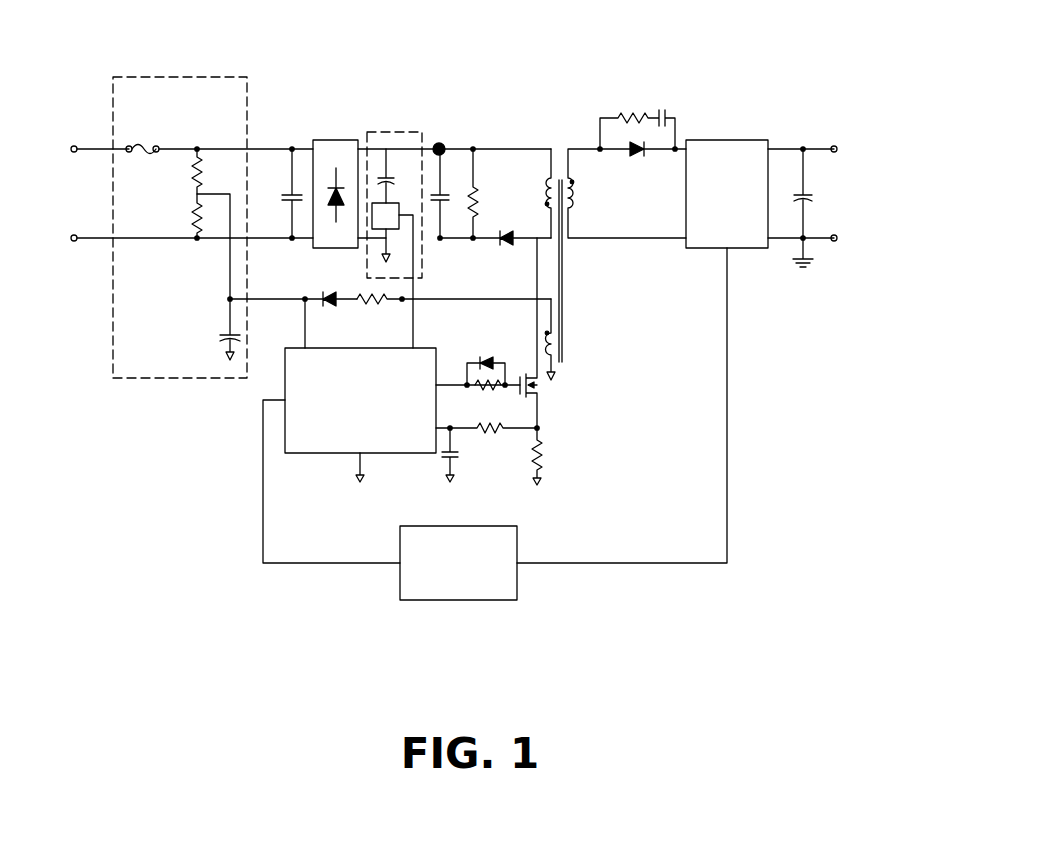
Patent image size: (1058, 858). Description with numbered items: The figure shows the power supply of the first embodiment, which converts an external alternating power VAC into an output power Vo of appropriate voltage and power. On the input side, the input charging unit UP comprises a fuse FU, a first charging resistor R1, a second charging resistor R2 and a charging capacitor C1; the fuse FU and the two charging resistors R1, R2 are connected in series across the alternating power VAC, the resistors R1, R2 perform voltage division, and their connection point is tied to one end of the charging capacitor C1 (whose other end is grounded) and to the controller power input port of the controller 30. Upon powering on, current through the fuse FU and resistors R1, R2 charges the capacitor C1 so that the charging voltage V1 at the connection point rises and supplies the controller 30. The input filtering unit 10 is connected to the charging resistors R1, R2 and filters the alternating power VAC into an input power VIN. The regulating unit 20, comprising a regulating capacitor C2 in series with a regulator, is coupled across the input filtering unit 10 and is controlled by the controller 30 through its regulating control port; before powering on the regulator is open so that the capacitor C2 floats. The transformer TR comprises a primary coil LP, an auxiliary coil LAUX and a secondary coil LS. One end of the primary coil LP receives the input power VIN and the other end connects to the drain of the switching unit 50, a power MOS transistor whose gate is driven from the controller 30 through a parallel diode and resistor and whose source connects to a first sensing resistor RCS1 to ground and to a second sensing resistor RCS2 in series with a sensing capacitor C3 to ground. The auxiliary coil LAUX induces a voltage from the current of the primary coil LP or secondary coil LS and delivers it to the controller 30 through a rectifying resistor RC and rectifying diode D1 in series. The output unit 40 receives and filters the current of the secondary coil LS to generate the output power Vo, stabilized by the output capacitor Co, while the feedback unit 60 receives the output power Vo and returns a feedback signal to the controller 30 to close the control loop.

The input filtering unit 10 is at (337, 140).
The regulating unit 20 is at (395, 132).
The controller 30 is at (436, 348).
The output unit 40 is at (727, 140).
The switching unit 50 is at (542, 388).
The feedback unit 60 is at (458, 600).
The transformer TR is at (580, 211).
The input charging unit UP is at (180, 378).
The fuse FU is at (219, 135).
The first charging resistor R1 is at (212, 223).
The second charging resistor R2 is at (179, 217).
The charging capacitor C1 is at (211, 329).
The rectifying diode D1 is at (330, 309).
The rectifying resistor RC is at (454, 310).
The regulating capacitor C2 is at (491, 194).
The sensing capacitor C3 is at (465, 454).
The primary coil LP is at (530, 193).
The secondary coil LS is at (627, 193).
The auxiliary coil LAUX is at (585, 339).
The first sensing resistor RCS1 is at (566, 456).
The second sensing resistor RCS2 is at (487, 417).
The output capacitor Co is at (818, 207).
The output power Vo is at (819, 190).
The external alternating power VAC is at (178, 193).
The input power VIN is at (487, 137).
The charging voltage V1 is at (247, 285).